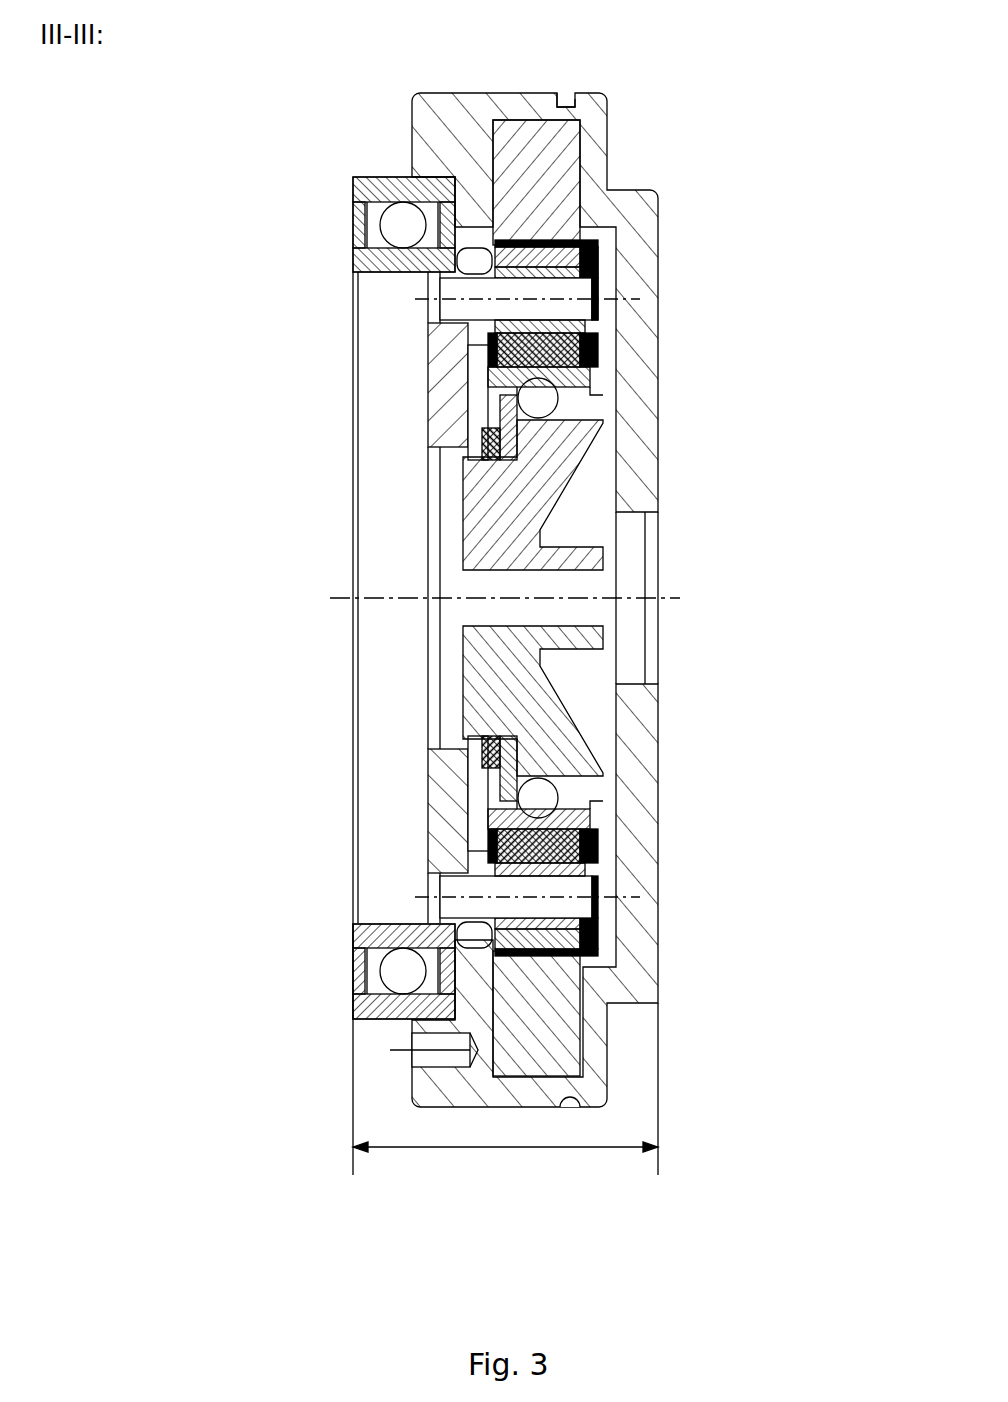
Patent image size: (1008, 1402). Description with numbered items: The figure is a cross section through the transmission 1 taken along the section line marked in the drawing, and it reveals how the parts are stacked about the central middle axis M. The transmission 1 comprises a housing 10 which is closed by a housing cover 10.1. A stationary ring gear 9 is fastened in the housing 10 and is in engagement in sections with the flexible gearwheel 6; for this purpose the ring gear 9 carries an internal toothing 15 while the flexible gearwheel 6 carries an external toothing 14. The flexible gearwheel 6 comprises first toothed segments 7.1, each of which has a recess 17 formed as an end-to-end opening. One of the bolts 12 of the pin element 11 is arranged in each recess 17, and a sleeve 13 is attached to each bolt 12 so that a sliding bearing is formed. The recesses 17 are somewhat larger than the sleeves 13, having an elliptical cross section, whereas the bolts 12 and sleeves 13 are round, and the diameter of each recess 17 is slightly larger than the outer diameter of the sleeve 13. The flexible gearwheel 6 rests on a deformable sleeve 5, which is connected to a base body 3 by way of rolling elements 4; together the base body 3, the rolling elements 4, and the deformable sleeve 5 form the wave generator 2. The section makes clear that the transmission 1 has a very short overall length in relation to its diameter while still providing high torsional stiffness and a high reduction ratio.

The transmission 1 is at (567, 598).
The wave generator 2 is at (565, 518).
The base body 3 is at (542, 652).
The rolling elements 4 is at (572, 400).
The deformable sleeve 5 is at (545, 395).
The flexible gearwheel 6 is at (607, 283).
The first toothed segment 7.1 is at (600, 350).
The stationary ring gear 9 is at (545, 175).
The housing 10 is at (458, 120).
The housing cover 10.1 is at (590, 93).
The pin element 11 is at (440, 370).
The bolt 12 is at (548, 297).
The sleeve 13 is at (597, 272).
The external toothing 14 is at (636, 571).
The internal toothing 15 is at (590, 245).
The recess 17 is at (592, 334).
The middle axis M is at (680, 598).